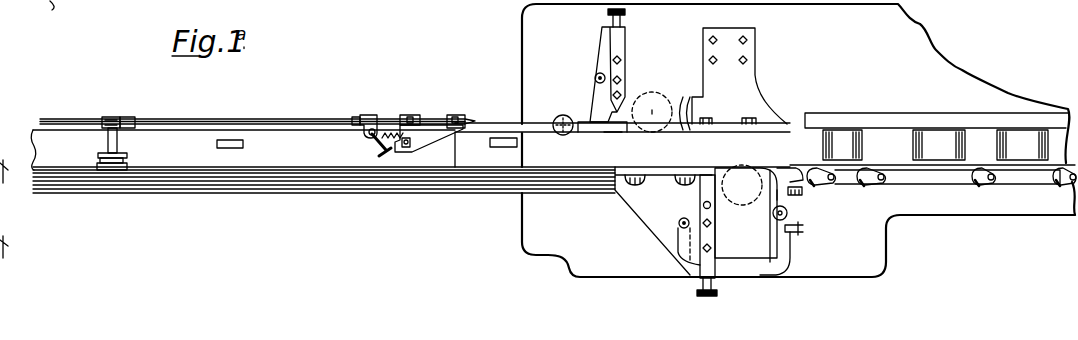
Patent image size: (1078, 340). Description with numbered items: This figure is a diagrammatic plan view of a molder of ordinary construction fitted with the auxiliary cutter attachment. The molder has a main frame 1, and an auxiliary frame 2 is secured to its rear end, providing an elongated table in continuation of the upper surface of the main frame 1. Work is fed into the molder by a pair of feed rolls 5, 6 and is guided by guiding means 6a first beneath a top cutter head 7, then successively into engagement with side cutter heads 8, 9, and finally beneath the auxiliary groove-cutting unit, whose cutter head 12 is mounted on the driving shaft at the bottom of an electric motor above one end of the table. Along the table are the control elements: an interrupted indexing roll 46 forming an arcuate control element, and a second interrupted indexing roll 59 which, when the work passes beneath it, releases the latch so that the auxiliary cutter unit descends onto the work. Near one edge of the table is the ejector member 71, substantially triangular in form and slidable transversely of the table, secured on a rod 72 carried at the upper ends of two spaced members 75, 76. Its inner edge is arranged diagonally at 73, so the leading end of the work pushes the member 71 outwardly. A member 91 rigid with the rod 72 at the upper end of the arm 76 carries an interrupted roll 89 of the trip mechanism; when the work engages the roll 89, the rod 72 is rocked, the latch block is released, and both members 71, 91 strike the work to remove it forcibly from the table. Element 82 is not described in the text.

The main frame 1 is at (798, 140).
The auxiliary frame 2 is at (366, 194).
The feed roll 5 is at (1020, 138).
The feed roll 6 is at (940, 138).
The guiding means 6a is at (620, 140).
The top cutter head 7 is at (843, 138).
The side cutter head 8 is at (742, 205).
The side cutter head 9 is at (660, 92).
The cutter head 12 is at (563, 114).
The interrupted indexing roll 46 is at (231, 148).
The second interrupted indexing roll 59 is at (503, 147).
The ejector member 71 is at (420, 118).
The rod 72 is at (305, 119).
The diagonal surface 73 is at (426, 146).
The supporting member 75 is at (452, 117).
The arm 76 is at (126, 117).
The lever 82 is at (378, 140).
The interrupted roll 89 is at (118, 193).
The member 91 is at (124, 154).